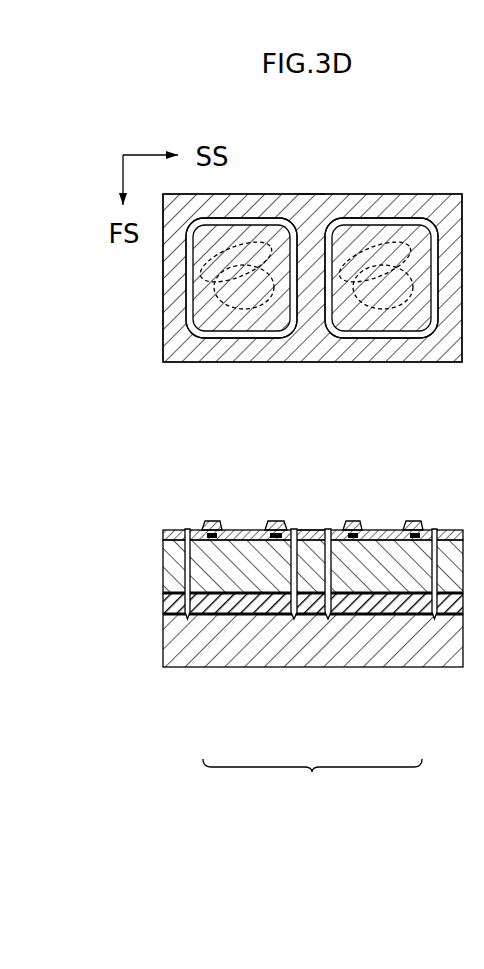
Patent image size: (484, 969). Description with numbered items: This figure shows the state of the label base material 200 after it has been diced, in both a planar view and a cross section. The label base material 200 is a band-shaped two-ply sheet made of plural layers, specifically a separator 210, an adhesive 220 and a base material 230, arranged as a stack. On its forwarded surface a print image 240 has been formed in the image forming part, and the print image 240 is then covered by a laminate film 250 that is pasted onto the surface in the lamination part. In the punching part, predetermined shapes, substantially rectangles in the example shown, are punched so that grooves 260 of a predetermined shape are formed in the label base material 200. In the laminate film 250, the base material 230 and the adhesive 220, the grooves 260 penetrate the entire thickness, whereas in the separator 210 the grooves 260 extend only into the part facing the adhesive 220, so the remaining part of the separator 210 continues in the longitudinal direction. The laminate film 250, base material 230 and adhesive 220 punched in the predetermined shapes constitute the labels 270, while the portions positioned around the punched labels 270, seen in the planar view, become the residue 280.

The label base material 200 is at (398, 181).
The separator 210 is at (403, 665).
The adhesive 220 is at (313, 604).
The base material 230 is at (227, 600).
The print image 240 is at (206, 303).
The laminate film 250 is at (165, 273).
The grooves 260 is at (196, 330).
The labels 270 is at (263, 221).
The residue 280 is at (312, 220).